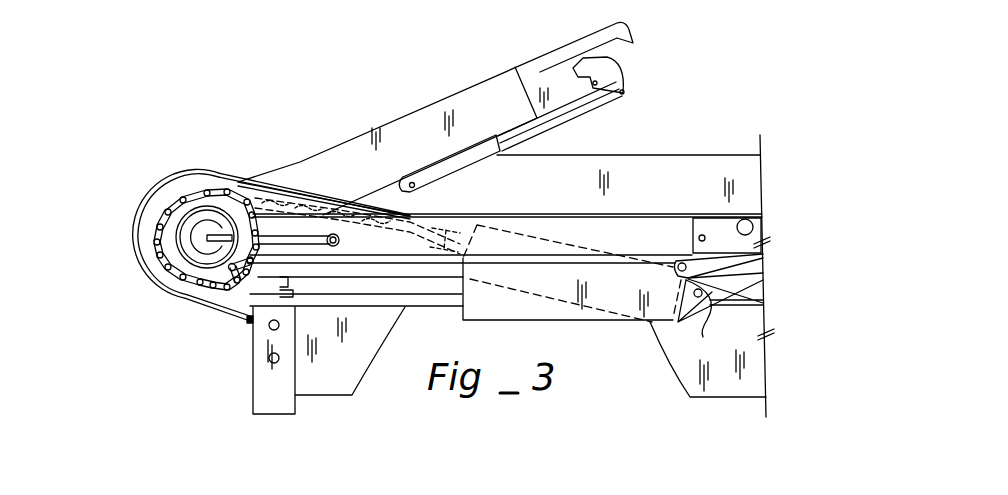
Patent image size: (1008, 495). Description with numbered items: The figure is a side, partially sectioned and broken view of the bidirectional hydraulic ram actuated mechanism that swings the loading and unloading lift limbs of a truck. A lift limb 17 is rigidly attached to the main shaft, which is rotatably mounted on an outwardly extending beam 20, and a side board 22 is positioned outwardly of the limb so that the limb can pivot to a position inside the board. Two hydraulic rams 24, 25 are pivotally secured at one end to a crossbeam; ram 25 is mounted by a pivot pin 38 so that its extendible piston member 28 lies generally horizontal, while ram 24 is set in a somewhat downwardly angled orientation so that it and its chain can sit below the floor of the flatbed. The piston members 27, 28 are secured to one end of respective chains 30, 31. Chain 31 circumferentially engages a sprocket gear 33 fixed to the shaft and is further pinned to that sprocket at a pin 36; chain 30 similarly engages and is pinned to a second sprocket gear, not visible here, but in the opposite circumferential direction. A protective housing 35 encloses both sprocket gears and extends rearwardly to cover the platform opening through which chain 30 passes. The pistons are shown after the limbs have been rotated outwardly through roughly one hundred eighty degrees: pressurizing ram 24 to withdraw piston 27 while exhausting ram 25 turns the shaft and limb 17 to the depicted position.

The lift limb 17 is at (363, 130).
The side board 22 is at (663, 157).
The beam 20 is at (553, 215).
The piston member 27 is at (435, 225).
The chain 30 is at (267, 190).
The protective housing 35 is at (176, 178).
The pin 36 is at (223, 303).
The chain 31 is at (170, 194).
The sprocket gear 33 is at (176, 272).
The piston member 28 is at (448, 283).
The hydraulic ram 25 is at (502, 317).
The hydraulic ram 24 is at (595, 315).
The pivot pin 38 is at (703, 325).